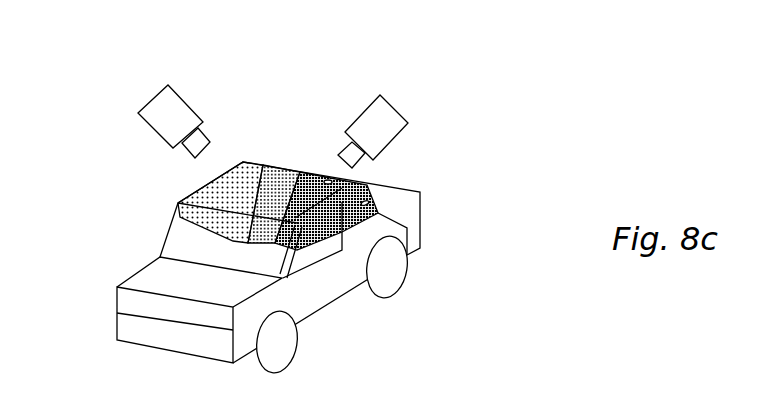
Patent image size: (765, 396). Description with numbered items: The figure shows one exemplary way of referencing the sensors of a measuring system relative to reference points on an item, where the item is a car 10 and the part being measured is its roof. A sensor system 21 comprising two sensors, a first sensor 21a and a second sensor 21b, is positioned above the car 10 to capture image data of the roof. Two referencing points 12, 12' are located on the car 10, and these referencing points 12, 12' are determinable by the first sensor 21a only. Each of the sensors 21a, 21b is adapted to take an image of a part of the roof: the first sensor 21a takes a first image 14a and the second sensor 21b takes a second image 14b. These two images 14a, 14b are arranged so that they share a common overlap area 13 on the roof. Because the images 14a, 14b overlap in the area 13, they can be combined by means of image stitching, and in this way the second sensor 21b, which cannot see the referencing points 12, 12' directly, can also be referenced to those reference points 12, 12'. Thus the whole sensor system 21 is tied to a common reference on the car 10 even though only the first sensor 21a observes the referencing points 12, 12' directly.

The car 10 is at (117, 251).
The referencing point 12 is at (295, 141).
The referencing point 12' is at (428, 221).
The common overlap area 13 is at (278, 171).
The image 14a is at (312, 198).
The image 14b is at (210, 198).
The sensor system 21 is at (335, 95).
The first sensor 21a is at (385, 125).
The second sensor 21b is at (172, 108).